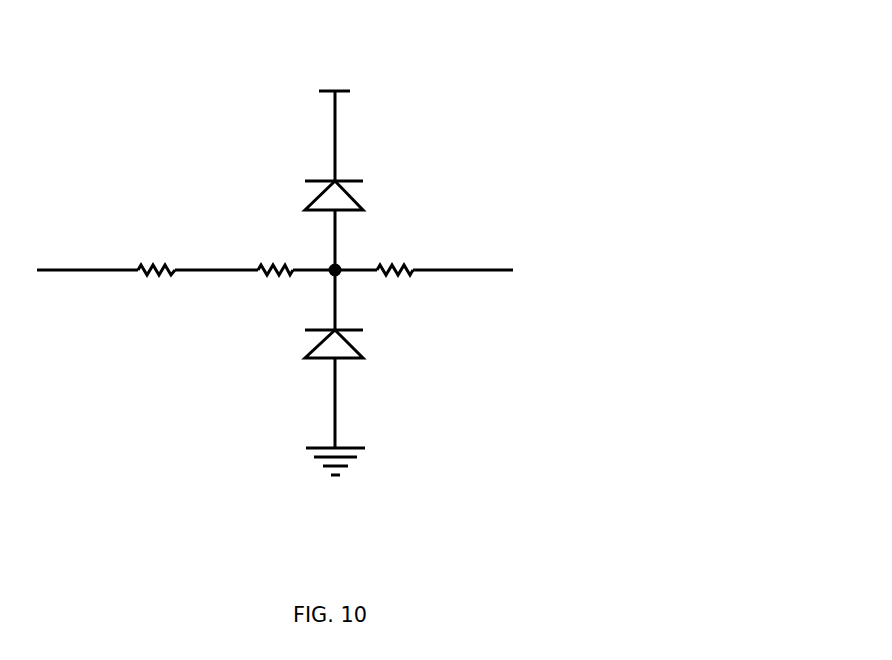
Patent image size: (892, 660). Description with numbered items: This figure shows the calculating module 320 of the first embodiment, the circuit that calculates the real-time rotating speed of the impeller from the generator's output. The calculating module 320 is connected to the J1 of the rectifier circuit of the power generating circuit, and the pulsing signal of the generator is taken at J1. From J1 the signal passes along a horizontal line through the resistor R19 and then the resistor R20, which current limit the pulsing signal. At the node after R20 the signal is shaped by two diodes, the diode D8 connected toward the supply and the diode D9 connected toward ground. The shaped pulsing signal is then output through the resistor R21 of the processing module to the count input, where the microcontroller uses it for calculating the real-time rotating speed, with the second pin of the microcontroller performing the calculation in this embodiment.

The calculating module 320 is at (270, 121).
The J1 of the rectifier circuit J1 is at (86, 254).
The element R19 is at (148, 273).
The element R20 is at (267, 273).
The R21 of the processing module R21 is at (386, 273).
The element D8 is at (366, 211).
The element D9 is at (366, 359).